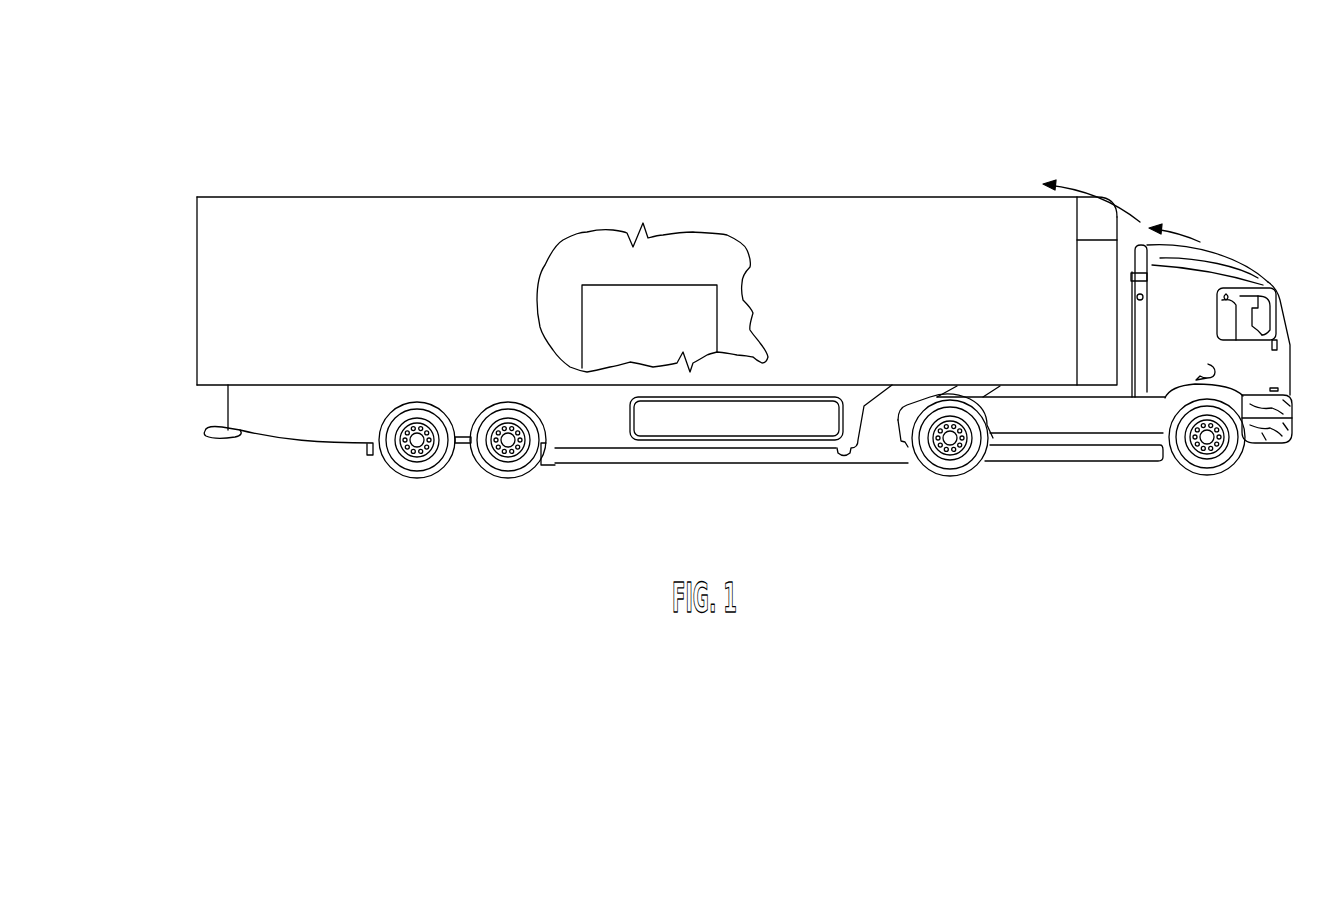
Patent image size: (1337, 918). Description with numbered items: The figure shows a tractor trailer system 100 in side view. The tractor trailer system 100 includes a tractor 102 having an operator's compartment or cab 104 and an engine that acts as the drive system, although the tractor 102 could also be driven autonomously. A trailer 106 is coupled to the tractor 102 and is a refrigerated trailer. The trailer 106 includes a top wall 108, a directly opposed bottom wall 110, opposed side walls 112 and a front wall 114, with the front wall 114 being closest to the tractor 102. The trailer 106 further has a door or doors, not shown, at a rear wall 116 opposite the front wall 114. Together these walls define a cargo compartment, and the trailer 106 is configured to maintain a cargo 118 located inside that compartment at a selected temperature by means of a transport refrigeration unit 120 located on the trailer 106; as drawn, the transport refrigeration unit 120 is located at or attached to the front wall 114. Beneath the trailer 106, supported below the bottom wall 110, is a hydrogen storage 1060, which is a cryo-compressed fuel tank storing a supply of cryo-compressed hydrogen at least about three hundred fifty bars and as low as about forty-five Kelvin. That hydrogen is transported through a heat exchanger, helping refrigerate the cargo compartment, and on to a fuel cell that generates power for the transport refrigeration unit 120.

The tractor trailer system 100 is at (435, 96).
The tractor 102 is at (1264, 437).
The cab 104 is at (1252, 302).
The trailer 106 is at (348, 221).
The top wall 108 is at (780, 197).
The bottom wall 110 is at (602, 385).
The side walls 112 is at (717, 270).
The front wall 114 is at (1077, 300).
The rear wall 116 is at (197, 257).
The cargo 118 is at (662, 337).
The transport refrigeration unit 120 is at (1094, 358).
The hydrogen storage 1060 is at (758, 440).